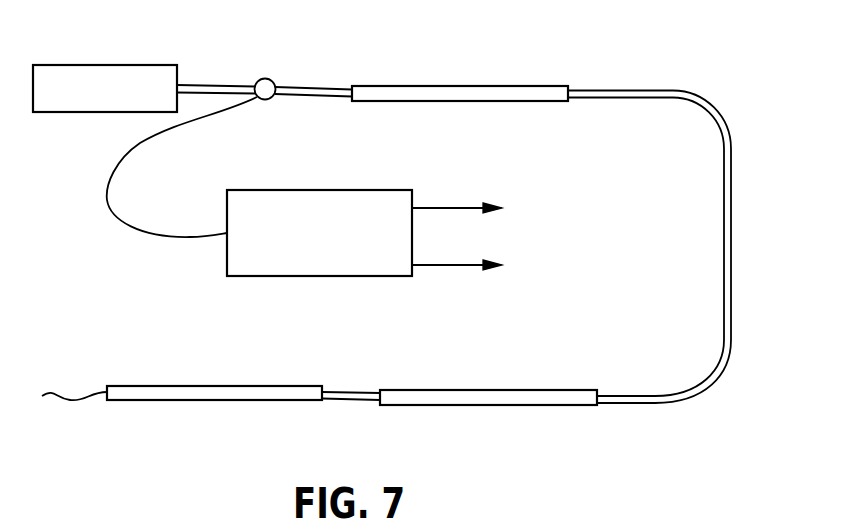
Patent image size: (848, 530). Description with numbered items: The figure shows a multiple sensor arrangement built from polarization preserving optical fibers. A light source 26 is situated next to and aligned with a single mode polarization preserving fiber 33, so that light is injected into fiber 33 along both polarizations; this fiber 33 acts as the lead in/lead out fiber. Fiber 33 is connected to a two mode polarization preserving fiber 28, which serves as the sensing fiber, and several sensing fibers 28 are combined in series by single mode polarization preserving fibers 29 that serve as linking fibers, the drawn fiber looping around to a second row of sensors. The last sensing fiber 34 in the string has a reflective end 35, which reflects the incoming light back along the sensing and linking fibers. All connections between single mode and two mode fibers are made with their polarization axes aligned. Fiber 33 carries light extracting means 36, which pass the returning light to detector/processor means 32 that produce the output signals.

The light source 26 is at (75, 65).
The two mode polarization preserving fiber 28 is at (432, 86).
The single mode polarization preserving fibers 29 is at (732, 232).
The detector/processor means 32 is at (297, 190).
The single mode polarization preserving fiber 33 is at (230, 86).
The last sensing fiber 34 is at (205, 400).
The reflective end 35 is at (66, 410).
The light extracting means 36 is at (270, 99).